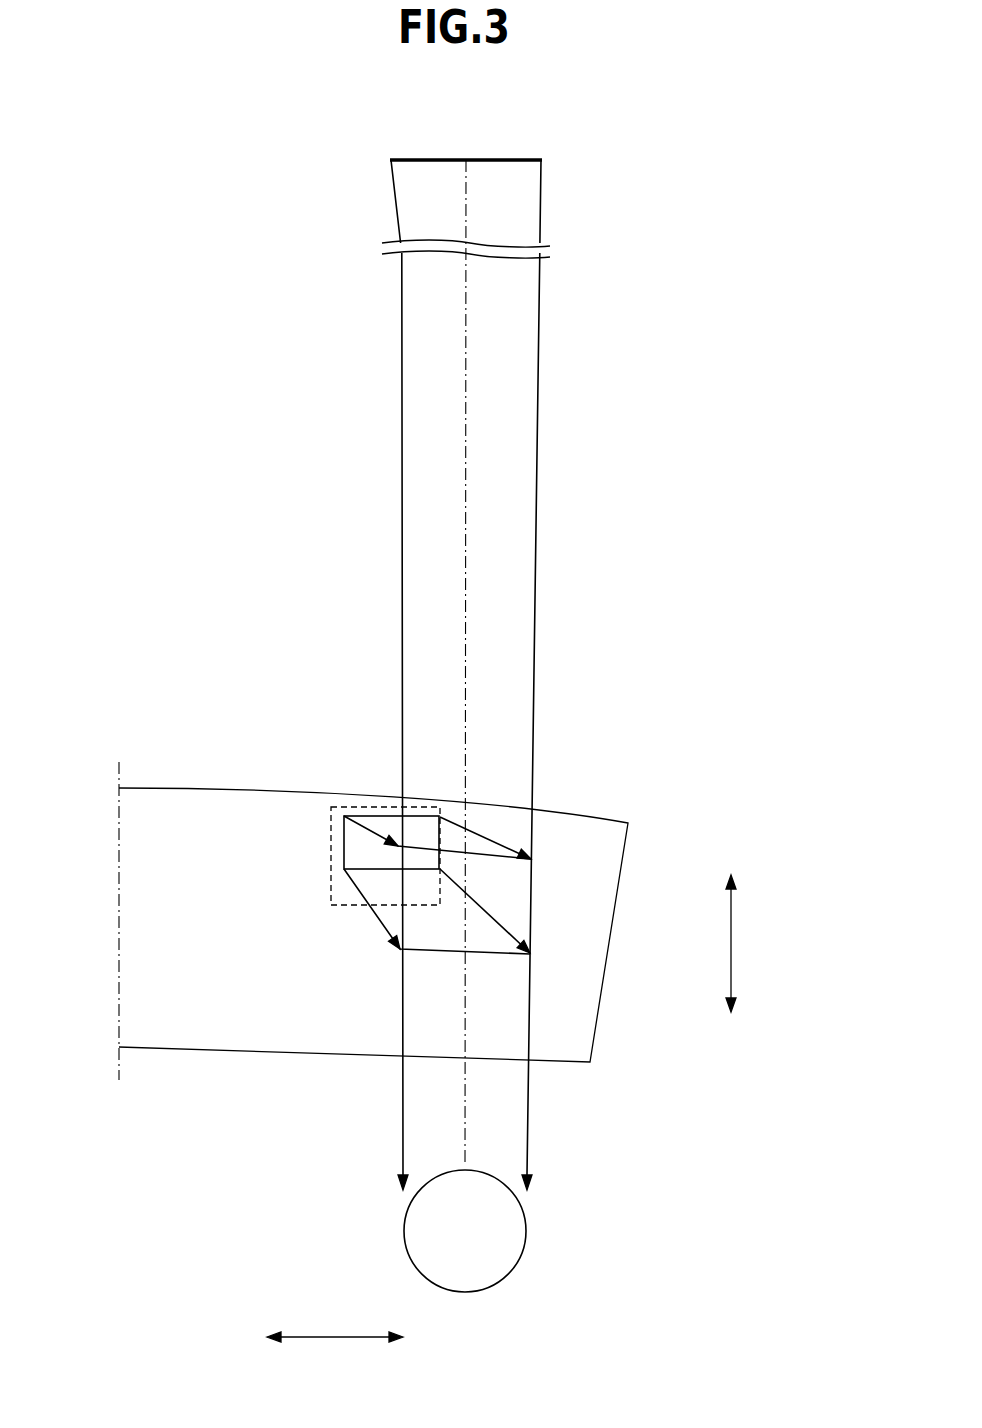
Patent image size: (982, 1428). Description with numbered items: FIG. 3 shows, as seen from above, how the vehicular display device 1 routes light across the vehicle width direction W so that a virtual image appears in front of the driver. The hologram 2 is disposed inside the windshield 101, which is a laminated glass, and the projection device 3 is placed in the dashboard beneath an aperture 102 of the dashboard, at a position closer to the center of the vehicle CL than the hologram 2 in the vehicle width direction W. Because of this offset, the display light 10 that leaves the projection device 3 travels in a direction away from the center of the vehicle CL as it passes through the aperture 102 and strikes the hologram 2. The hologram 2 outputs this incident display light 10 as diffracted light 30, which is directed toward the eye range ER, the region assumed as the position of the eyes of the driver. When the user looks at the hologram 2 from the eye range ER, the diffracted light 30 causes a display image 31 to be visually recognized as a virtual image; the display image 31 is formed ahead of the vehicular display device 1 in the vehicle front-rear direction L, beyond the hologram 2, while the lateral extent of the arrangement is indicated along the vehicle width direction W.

The vehicular display device 1 is at (297, 665).
The hologram 2 is at (455, 848).
The projection device 3 is at (361, 806).
The display light 10 is at (482, 836).
The diffracted light 30 is at (529, 1106).
The display image 31 is at (506, 160).
The windshield 101 is at (568, 843).
The aperture 102 is at (347, 842).
The center of the vehicle CL is at (120, 760).
The eye range ER is at (529, 1232).
The vehicle front-rear direction L is at (743, 943).
The vehicle width direction W is at (335, 1323).